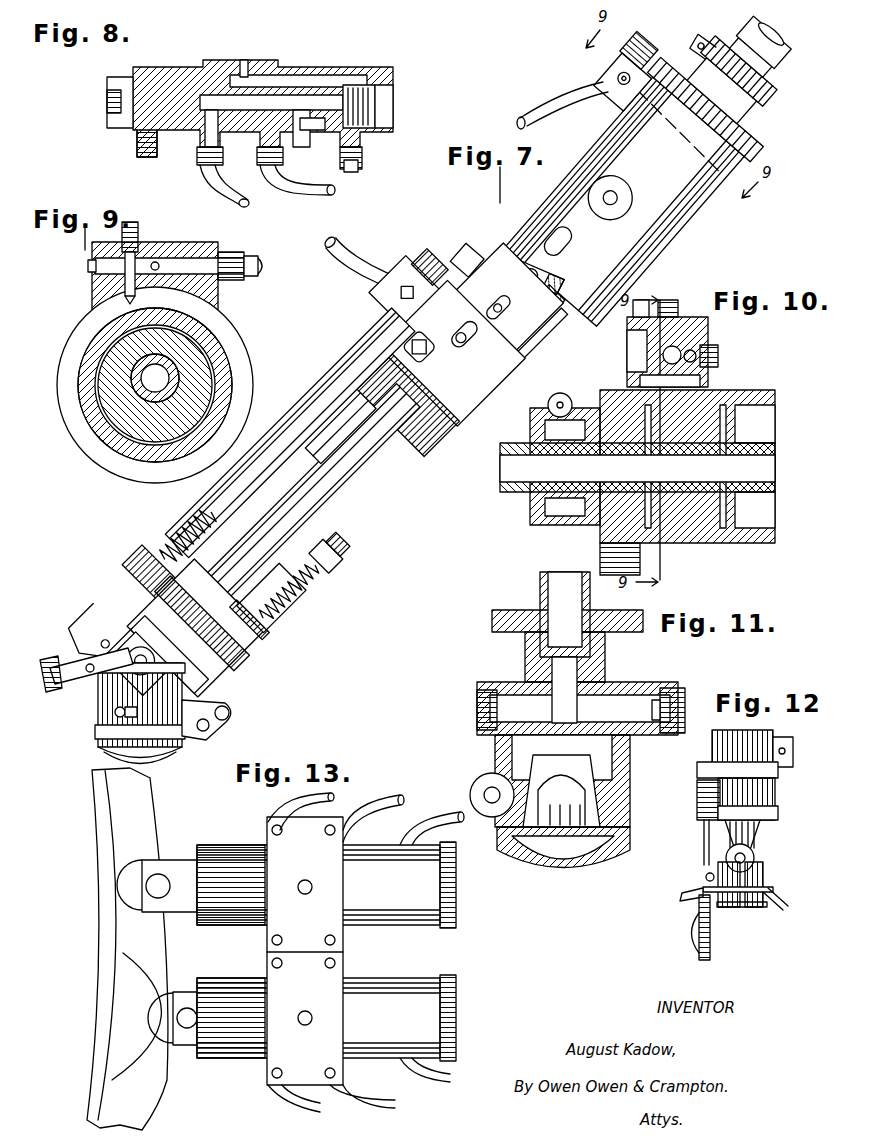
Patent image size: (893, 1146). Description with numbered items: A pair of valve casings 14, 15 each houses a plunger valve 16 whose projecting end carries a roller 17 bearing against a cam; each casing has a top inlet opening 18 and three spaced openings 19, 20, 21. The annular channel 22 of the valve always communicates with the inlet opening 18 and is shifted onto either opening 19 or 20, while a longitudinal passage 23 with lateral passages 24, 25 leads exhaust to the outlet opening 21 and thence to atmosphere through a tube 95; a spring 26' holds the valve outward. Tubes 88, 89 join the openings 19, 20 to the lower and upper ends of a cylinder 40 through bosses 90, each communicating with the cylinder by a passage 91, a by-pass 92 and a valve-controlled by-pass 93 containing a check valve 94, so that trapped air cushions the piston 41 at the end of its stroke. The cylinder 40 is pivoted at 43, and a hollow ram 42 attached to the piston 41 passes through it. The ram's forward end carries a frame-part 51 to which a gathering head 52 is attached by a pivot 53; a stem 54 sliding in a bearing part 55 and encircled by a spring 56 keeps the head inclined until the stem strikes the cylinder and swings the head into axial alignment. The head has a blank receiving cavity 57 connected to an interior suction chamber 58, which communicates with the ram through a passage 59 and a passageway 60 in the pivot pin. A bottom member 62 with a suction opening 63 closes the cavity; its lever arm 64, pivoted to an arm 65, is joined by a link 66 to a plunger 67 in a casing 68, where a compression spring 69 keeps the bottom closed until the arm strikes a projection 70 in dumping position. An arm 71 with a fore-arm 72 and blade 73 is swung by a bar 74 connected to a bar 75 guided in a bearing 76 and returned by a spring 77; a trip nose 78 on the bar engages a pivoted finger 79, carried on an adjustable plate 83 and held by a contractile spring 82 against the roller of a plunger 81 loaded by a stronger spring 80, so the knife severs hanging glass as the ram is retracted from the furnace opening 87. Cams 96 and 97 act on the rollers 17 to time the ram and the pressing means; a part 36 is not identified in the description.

In FIG. 8, the valve casing 14 is at (340, 70).
In FIG. 13, the valve casing 14 is at (326, 885).
In FIG. 13, the valve casing 15 is at (326, 1018).
In FIG. 8, the plunger valve 16 is at (188, 92).
In FIG. 13, the plunger valve 16 is at (180, 870).
In FIG. 8, the roller 17 is at (112, 100).
In FIG. 13, the roller 17 is at (150, 862).
In FIG. 8, the inlet opening 18 is at (240, 68).
In FIG. 8, the opening 19 is at (208, 135).
In FIG. 8, the opening 20 is at (265, 135).
In FIG. 8, the exhaust outlet opening 21 is at (355, 138).
In FIG. 8, the annular circumferential channel 22 is at (265, 87).
In FIG. 8, the longitudinal bore or passage 23 is at (330, 102).
In FIG. 8, the lateral passage 24 is at (165, 135).
In FIG. 8, the lateral passage 25 is at (305, 128).
In FIG. 8, the spring 26' is at (401, 106).
In FIG. 13, the hoses 36 is at (322, 1108).
In FIG. 9, the cylinder 40 is at (105, 405).
In FIG. 7, the cylinder 40 is at (663, 166).
In FIG. 10, the cylinder 40 is at (770, 392).
In FIG. 11, the cylinder 40 is at (676, 726).
In FIG. 12, the cylinder 40 is at (715, 745).
In FIG. 9, the piston 41 is at (200, 375).
In FIG. 10, the piston 41 is at (700, 515).
In FIG. 9, the ram 42 is at (150, 392).
In FIG. 7, the ram 42 is at (299, 491).
In FIG. 10, the ram 42 is at (775, 445).
In FIG. 11, the ram 42 is at (545, 585).
In FIG. 7, the pivot 43 is at (610, 198).
In FIG. 7, the casing or frame-part 51 is at (197, 628).
In FIG. 11, the casing or frame-part 51 is at (530, 660).
In FIG. 12, the casing or frame-part 51 is at (760, 822).
In FIG. 7, the gathering head 52 is at (110, 705).
In FIG. 11, the gathering head 52 is at (622, 780).
In FIG. 7, the pivot pin 53 is at (139, 664).
In FIG. 11, the pivot pin 53 is at (480, 716).
In FIG. 7, the stem 54 is at (289, 592).
In FIG. 12, the stem 54 is at (703, 838).
In FIG. 7, the bearing part 55 is at (269, 599).
In FIG. 7, the spring 56 is at (331, 551).
In FIG. 11, the blank receiving cavity 57 is at (561, 791).
In FIG. 11, the suction chamber 58 is at (515, 750).
In FIG. 11, the passage 59 is at (565, 672).
In FIG. 11, the passageway 60 is at (515, 705).
In FIG. 7, the bottom member 62 is at (110, 752).
In FIG. 11, the bottom member 62 is at (520, 855).
In FIG. 12, the bottom member 62 is at (699, 948).
In FIG. 11, the suction opening 63 is at (562, 862).
In FIG. 7, the lever arm 64 is at (206, 735).
In FIG. 7, the arm 65 is at (137, 713).
In FIG. 7, the link 66 is at (226, 705).
In FIG. 12, the plunger 67 is at (728, 908).
In FIG. 12, the casing 68 is at (765, 882).
In FIG. 12, the coiled compression spring 69 is at (752, 908).
In FIG. 12, the projection 70 is at (682, 900).
In FIG. 7, the arm 71 is at (149, 572).
In FIG. 11, the arm 71 is at (660, 735).
In FIG. 7, the fore-arm portion 72 is at (80, 660).
In FIG. 7, the blade 73 is at (50, 662).
In FIG. 12, the blade 73 is at (787, 904).
In FIG. 7, the bar 74 is at (96, 632).
In FIG. 7, the bar 75 is at (290, 433).
In FIG. 7, the bearing 76 is at (476, 330).
In FIG. 7, the coiled compression spring 77 is at (188, 535).
In FIG. 7, the trip nose 78 is at (467, 260).
In FIG. 7, the pivoted finger 79 is at (528, 273).
In FIG. 7, the spring 80 is at (521, 331).
In FIG. 7, the plunger 81 is at (526, 350).
In FIG. 7, the coiled contractile spring 82 is at (553, 296).
In FIG. 7, the plate 83 is at (558, 241).
In FIG. 7, the receiving opening 87 is at (408, 405).
In FIG. 8, the tube 88 is at (242, 206).
In FIG. 7, the tube 88 is at (355, 259).
In FIG. 13, the tube 88 is at (298, 810).
In FIG. 8, the tube 89 is at (332, 192).
In FIG. 9, the tube 89 is at (250, 278).
In FIG. 7, the tube 89 is at (535, 100).
In FIG. 13, the tube 89 is at (365, 805).
In FIG. 9, the boss 90 is at (176, 245).
In FIG. 7, the boss 90 is at (385, 305).
In FIG. 10, the boss 90 is at (635, 352).
In FIG. 9, the passage 91 is at (195, 262).
In FIG. 10, the passage 91 is at (638, 307).
In FIG. 9, the by-pass 92 is at (130, 300).
In FIG. 10, the by-pass 92 is at (700, 380).
In FIG. 9, the valve controlled by-pass 93 is at (155, 262).
In FIG. 10, the valve controlled by-pass 93 is at (672, 348).
In FIG. 10, the check valve 94 is at (718, 355).
In FIG. 8, the tube 95 is at (352, 160).
In FIG. 13, the tube 95 is at (436, 818).
In FIG. 13, the cam 96 is at (136, 1016).
In FIG. 13, the control cam 97 is at (150, 937).